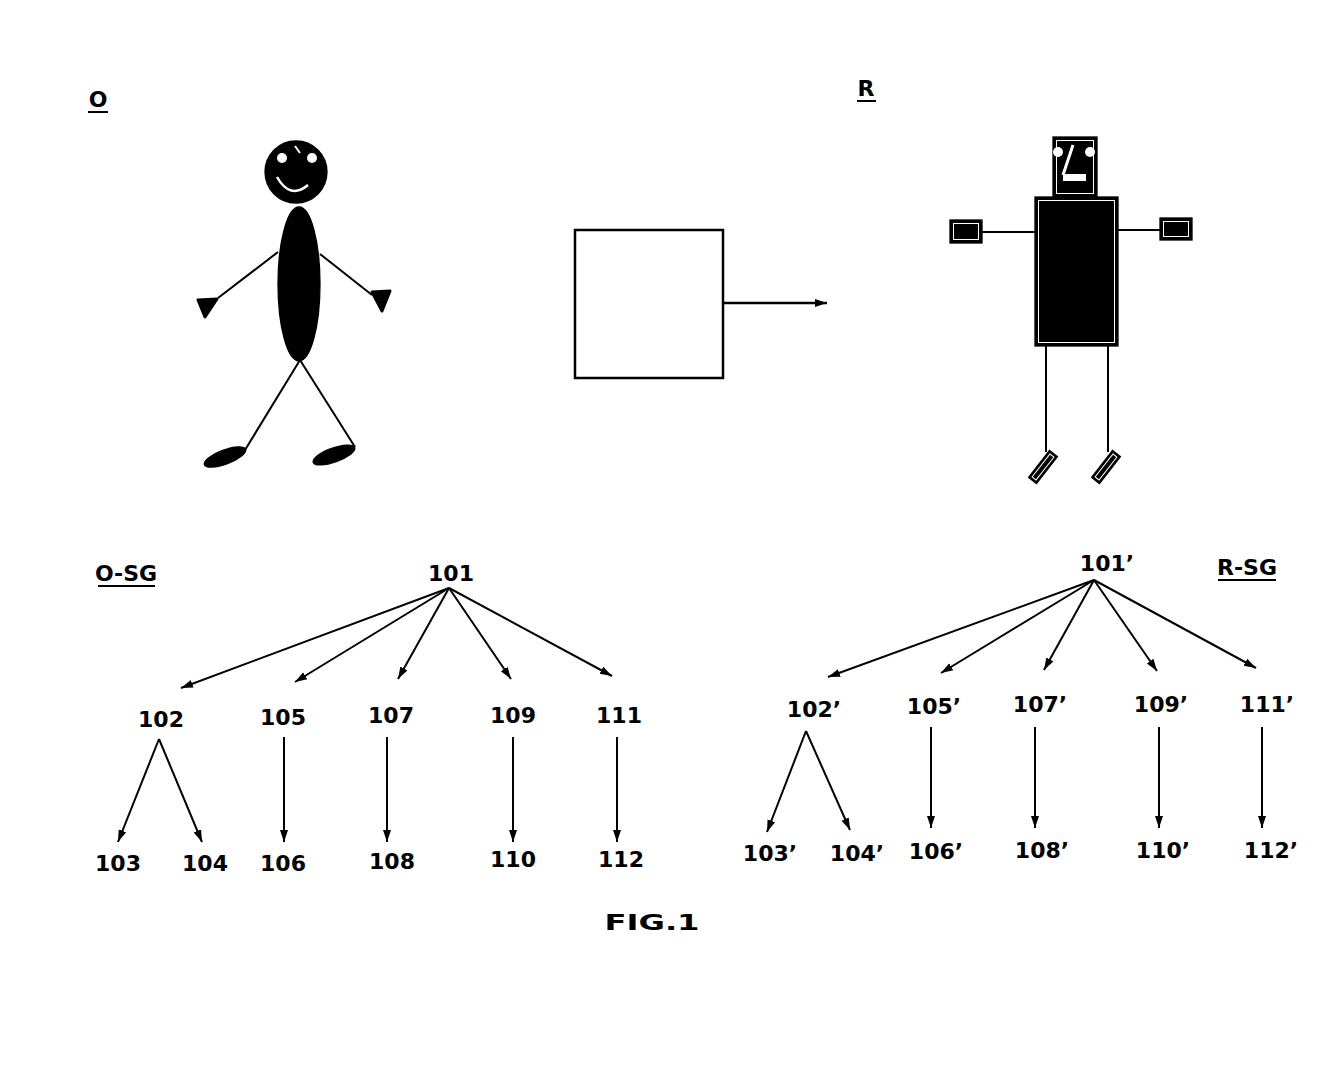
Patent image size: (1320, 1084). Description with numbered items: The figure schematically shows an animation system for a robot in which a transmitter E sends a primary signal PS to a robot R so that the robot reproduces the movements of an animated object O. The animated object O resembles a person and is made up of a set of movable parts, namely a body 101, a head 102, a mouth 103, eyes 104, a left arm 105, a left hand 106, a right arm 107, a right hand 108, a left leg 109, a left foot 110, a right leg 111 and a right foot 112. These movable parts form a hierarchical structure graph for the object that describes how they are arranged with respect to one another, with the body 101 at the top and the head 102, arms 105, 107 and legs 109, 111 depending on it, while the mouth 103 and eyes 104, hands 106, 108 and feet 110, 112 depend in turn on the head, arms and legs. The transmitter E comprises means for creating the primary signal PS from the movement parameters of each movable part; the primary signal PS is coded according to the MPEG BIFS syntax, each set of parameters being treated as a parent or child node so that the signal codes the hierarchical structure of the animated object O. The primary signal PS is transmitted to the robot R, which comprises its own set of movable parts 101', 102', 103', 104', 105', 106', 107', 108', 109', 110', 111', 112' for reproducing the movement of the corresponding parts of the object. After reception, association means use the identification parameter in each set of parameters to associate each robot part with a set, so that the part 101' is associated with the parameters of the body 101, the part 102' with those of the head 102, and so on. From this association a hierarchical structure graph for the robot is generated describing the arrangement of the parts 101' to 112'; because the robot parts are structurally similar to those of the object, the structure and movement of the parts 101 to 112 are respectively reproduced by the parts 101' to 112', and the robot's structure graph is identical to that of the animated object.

The body 101 is at (359, 268).
The head 102 is at (355, 165).
The mouth 103 is at (227, 155).
The eyes 104 is at (354, 127).
The left arm 105 is at (393, 254).
The left hand 106 is at (443, 327).
The right arm 107 is at (206, 256).
The right hand 108 is at (154, 331).
The left leg 109 is at (374, 392).
The left foot 110 is at (385, 478).
The right leg 111 is at (226, 405).
The right foot 112 is at (273, 482).
The movable part of the robot (body) 101' is at (1147, 251).
The movable part of the robot (head) 102' is at (1143, 162).
The movable part of the robot (mouth) 103' is at (1006, 140).
The movable part of the robot (eyes) 104' is at (1140, 119).
The movable part of the robot (left arm) 105' is at (1196, 272).
The movable part of the robot (left hand) 106' is at (1240, 250).
The movable part of the robot (right arm) 107' is at (962, 201).
The movable part of the robot (right hand) 108' is at (919, 260).
The movable part of the robot (left leg) 109' is at (1173, 398).
The movable part of the robot (left foot) 110' is at (1165, 487).
The movable part of the robot (right leg) 111' is at (990, 399).
The movable part of the robot (right foot) 112' is at (975, 465).
The transmitter E is at (645, 230).
The primary signal PS is at (788, 302).